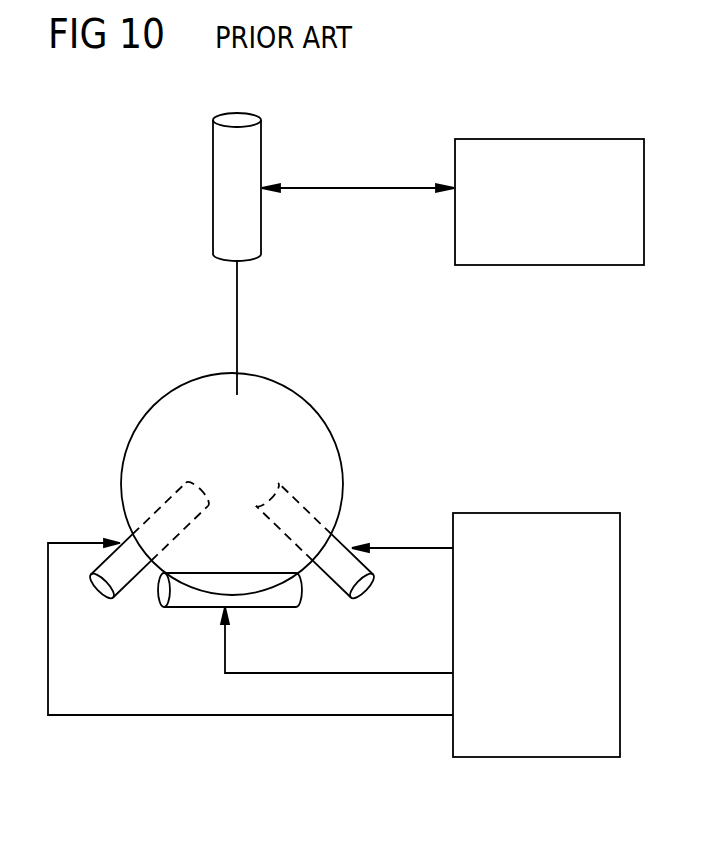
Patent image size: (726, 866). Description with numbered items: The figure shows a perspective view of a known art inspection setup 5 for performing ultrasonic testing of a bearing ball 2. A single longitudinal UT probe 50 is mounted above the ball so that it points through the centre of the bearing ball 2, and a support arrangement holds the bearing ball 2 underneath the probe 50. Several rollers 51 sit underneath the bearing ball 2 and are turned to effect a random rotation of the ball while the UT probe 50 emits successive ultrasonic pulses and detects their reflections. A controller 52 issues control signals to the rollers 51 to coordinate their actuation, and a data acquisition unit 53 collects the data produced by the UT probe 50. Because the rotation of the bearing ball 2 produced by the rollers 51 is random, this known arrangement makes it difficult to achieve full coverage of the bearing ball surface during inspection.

The inspection setup 5 is at (113, 292).
The longitudinal UT probe 50 is at (262, 152).
The data acquisition unit 53 is at (523, 139).
The bearing ball 2 is at (301, 403).
The controller 52 is at (512, 513).
The rollers 51 is at (103, 594).